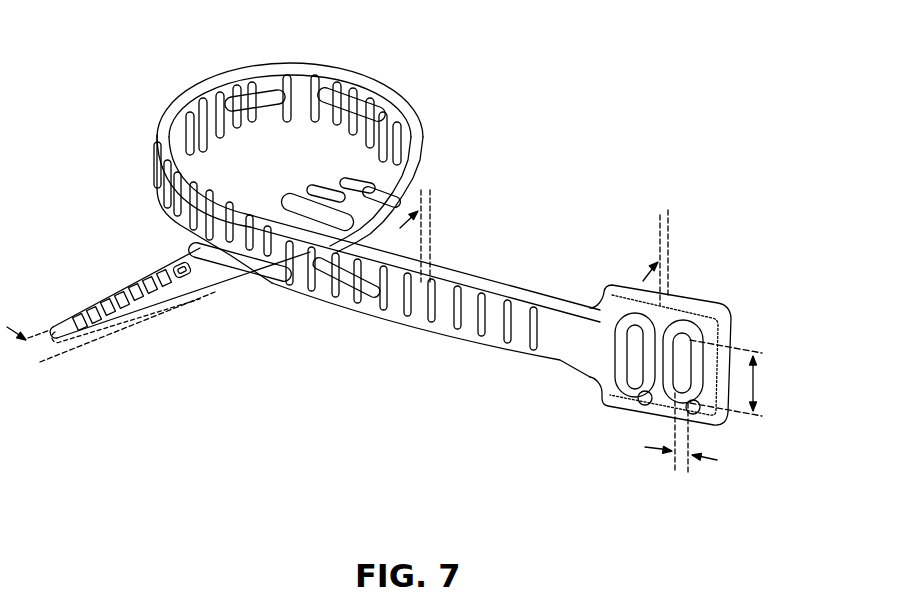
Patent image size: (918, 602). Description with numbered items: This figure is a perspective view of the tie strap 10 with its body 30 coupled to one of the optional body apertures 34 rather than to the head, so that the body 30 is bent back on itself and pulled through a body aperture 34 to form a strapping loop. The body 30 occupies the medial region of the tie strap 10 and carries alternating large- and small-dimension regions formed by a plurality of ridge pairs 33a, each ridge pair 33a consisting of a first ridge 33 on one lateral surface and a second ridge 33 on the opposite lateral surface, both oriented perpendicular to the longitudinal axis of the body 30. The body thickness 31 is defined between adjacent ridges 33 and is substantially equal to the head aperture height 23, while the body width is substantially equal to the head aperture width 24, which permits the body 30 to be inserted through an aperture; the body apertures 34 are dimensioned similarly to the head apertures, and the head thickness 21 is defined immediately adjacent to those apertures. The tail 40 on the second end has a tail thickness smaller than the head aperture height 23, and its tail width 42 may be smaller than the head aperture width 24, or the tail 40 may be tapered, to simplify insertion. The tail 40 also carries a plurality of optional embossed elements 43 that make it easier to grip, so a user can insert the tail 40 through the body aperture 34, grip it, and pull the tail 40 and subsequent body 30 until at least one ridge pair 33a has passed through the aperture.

The tie strap 10 is at (598, 161).
The head thickness 21 is at (678, 236).
The head aperture height 23 is at (648, 448).
The head aperture width 24 is at (760, 378).
The body 30 is at (413, 118).
The body thickness 31 is at (433, 200).
The ridge 33 is at (508, 306).
The ridge pair 33a is at (458, 290).
The body aperture 34 is at (336, 279).
The tail 40 is at (110, 293).
The tail width 42 is at (59, 357).
The embossed elements 43 is at (166, 276).